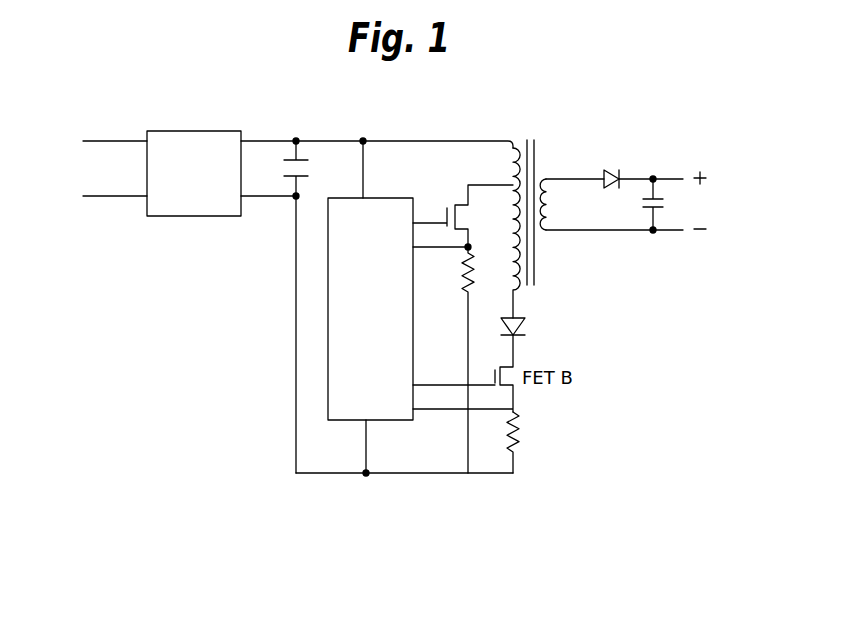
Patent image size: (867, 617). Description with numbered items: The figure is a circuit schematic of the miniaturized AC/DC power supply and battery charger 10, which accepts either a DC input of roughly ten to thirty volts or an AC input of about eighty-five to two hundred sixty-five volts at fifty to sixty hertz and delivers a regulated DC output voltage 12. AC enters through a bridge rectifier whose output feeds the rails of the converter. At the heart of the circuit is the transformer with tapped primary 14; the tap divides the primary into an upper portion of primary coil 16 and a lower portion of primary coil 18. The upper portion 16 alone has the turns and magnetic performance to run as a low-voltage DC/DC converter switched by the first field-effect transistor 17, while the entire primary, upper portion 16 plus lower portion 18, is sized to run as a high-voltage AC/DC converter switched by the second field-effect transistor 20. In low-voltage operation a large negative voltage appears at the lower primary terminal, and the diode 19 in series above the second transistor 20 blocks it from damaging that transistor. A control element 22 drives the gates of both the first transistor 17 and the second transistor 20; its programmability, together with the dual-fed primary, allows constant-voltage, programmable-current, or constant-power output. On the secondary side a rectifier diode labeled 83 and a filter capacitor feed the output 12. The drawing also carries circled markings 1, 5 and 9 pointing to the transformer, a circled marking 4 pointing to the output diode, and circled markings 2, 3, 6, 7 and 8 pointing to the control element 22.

The miniaturized AC/DC power supply and battery charger 10 is at (243, 463).
The regulated DC output voltage 12 is at (725, 182).
The transformer with tapped primary 14 is at (521, 106).
The upper portion of primary coil 16 is at (512, 178).
The FET A 17 is at (441, 158).
The lower portion of primary coil 18 is at (523, 268).
The diode 19 is at (538, 318).
The FET B 20 is at (205, 131).
The control element 22 is at (342, 363).
The rectifier diode D2 83 is at (621, 142).
The circled designation 1 (transformer) 1 is at (540, 123).
The circled designation 5 (transformer) 5 is at (666, 79).
The circled designation 9 (transformer) 9 is at (707, 79).
The circled designation 4 (diode D2) 4 is at (615, 190).
The circled designation 2 (control) 2 is at (344, 422).
The circled designation 3 (control) 3 is at (388, 579).
The circled designation 6 (control) 6 is at (431, 579).
The circled designation 7 (control) 7 is at (474, 579).
The circled designation 8 (control) 8 is at (517, 579).